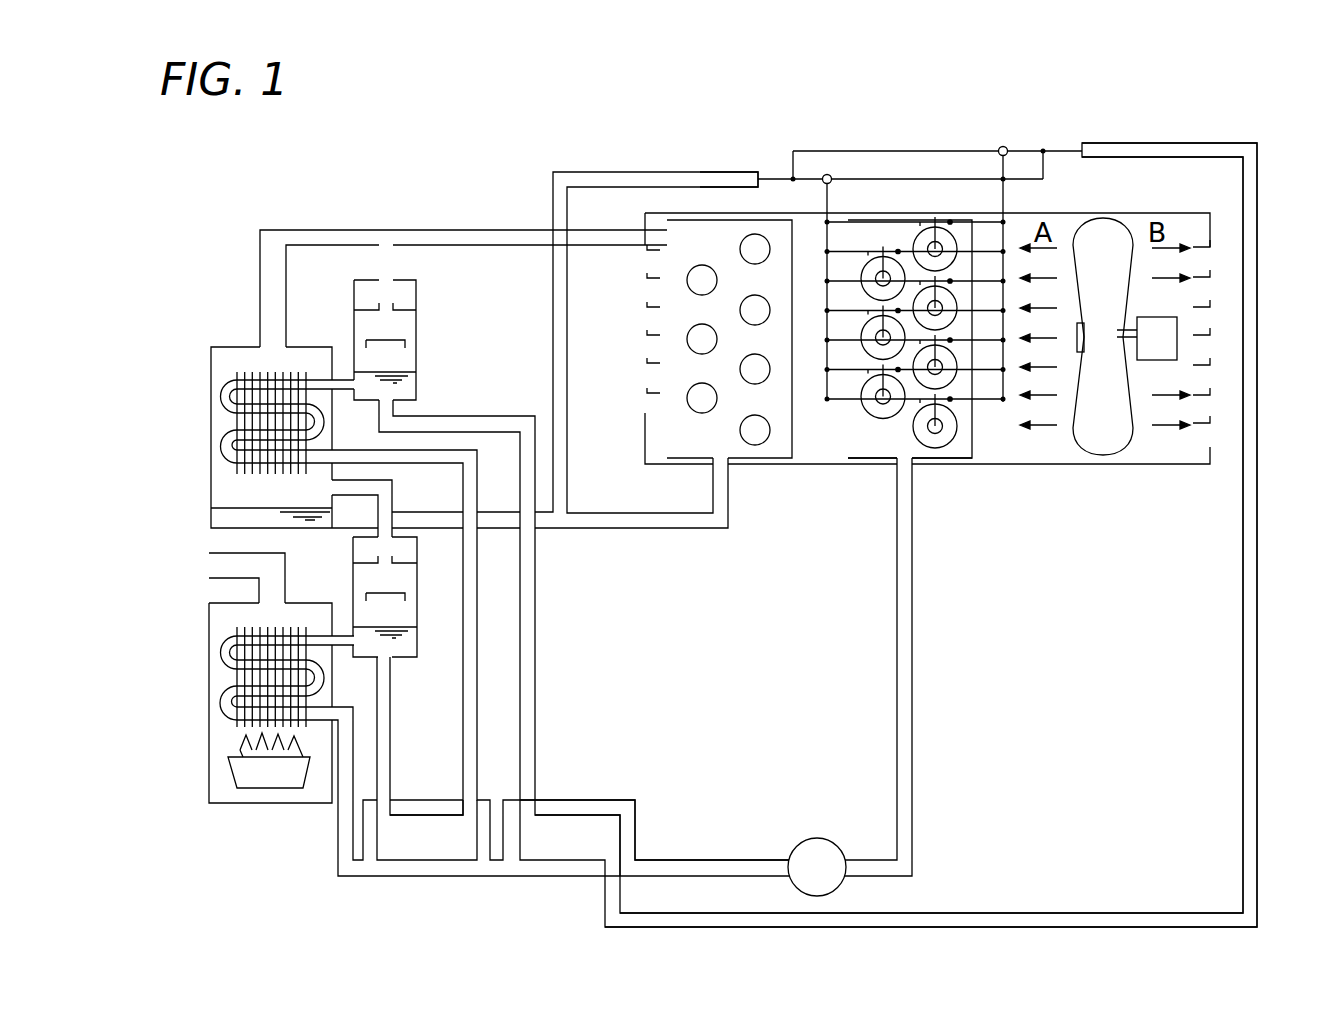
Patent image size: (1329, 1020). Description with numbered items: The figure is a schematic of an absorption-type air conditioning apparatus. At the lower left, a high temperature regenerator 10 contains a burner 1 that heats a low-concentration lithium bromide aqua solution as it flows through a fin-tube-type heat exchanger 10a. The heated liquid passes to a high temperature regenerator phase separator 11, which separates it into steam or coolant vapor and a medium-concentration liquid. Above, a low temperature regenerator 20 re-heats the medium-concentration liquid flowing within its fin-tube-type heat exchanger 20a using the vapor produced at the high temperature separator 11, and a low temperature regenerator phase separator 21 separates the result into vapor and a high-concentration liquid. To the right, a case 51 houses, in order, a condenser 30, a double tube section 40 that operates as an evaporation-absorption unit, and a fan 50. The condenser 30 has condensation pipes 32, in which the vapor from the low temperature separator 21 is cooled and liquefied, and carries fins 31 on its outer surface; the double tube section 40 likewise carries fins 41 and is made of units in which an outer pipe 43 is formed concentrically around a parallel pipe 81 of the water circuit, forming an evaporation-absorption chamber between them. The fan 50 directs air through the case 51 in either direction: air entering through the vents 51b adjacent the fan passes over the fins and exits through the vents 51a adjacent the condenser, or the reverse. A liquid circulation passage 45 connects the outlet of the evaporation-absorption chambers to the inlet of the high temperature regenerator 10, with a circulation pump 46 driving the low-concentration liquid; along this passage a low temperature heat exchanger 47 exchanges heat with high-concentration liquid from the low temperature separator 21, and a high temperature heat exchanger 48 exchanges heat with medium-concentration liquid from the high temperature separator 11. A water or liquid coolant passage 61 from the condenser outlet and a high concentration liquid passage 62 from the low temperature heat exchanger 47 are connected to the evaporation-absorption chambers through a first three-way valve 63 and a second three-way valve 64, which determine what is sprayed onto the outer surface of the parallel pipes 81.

The burner 1 is at (275, 788).
The high temperature regenerator 10 is at (208, 630).
The fin-tube-type heat exchanger 10a is at (218, 703).
The high temperature regenerator phase separator 11 is at (417, 640).
The low temperature regenerator 20 is at (211, 367).
The fin-tube-type heat exchanger 20a is at (219, 446).
The low temperature regenerator phase separator 21 is at (417, 333).
The condenser 30 is at (753, 394).
The fins 31 is at (793, 428).
The condensation pipes 32 is at (757, 472).
The double tube section 40 is at (932, 392).
The fins 41 is at (973, 428).
The outer pipe 43 is at (927, 445).
The liquid circulation passage 45 is at (897, 658).
The circulation pump 46 is at (800, 845).
The low temperature heat exchanger 47 is at (578, 799).
The high temperature heat exchanger 48 is at (423, 800).
The fan 50 is at (1073, 432).
The case 51 is at (1172, 464).
The vent 51a is at (648, 393).
The vent 51b is at (1210, 418).
The water or liquid coolant passage 61 is at (780, 177).
The high concentration liquid passage 62 is at (1073, 125).
The first three-way valve 63 is at (830, 175).
The second three-way valve 64 is at (1000, 150).
The parallel pipes 81 is at (937, 440).